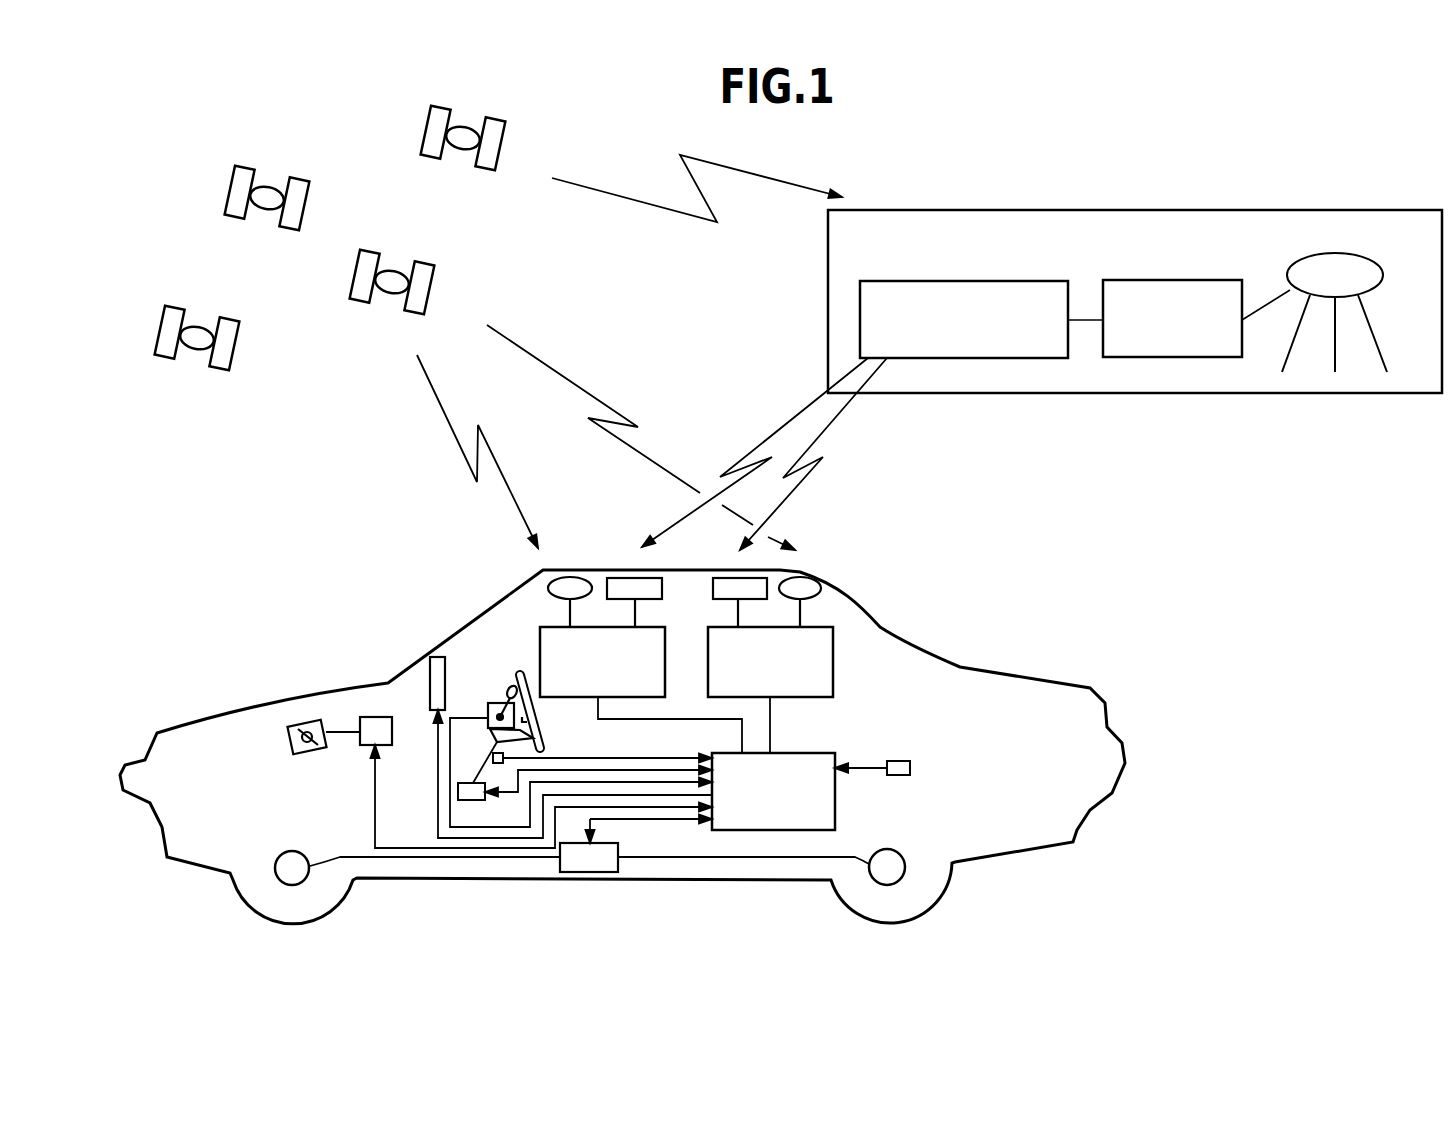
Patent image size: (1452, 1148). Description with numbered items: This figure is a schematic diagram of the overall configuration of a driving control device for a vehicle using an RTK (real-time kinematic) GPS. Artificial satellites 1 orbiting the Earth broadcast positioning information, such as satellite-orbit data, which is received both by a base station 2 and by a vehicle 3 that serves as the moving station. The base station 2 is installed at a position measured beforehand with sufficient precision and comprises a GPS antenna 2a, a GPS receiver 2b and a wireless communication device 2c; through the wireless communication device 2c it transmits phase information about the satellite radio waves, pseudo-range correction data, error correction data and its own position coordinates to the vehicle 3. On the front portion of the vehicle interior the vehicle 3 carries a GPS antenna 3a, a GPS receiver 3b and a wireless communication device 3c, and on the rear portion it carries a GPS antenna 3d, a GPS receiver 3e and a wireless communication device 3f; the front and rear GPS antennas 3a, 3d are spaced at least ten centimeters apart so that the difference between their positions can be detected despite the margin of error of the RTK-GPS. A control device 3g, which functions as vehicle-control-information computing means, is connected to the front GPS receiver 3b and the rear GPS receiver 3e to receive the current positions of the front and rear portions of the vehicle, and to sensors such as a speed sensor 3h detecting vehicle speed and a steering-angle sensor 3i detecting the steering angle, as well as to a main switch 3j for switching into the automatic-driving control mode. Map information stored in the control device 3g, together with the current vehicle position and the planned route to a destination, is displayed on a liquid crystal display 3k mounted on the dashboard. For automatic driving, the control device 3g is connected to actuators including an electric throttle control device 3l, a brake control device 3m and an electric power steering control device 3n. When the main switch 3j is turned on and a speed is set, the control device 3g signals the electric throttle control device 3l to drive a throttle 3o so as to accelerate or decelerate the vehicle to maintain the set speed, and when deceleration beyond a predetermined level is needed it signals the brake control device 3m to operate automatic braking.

The artificial satellites (GPS satellites) 1 is at (507, 131).
The base station 2 is at (1245, 208).
The GPS antenna 2a is at (1375, 250).
The GPS receiver 2b is at (1178, 280).
The wireless communication device 2c is at (975, 281).
The vehicle 3 is at (987, 667).
The GPS antenna 3a is at (565, 578).
The GPS receiver 3b is at (650, 627).
The wireless communication device 3c is at (625, 578).
The GPS antenna 3d is at (808, 578).
The GPS receiver 3e is at (833, 665).
The wireless communication device 3f is at (725, 578).
The control device 3g is at (825, 753).
The speed sensor 3h is at (910, 765).
The steering-angle sensor 3i is at (508, 755).
The main switch 3j is at (493, 703).
The liquid crystal display 3k is at (438, 655).
The electric throttle control device 3l is at (375, 715).
The brake control device 3m is at (587, 872).
The electric power steering control device 3n is at (470, 800).
The throttle 3o is at (303, 720).